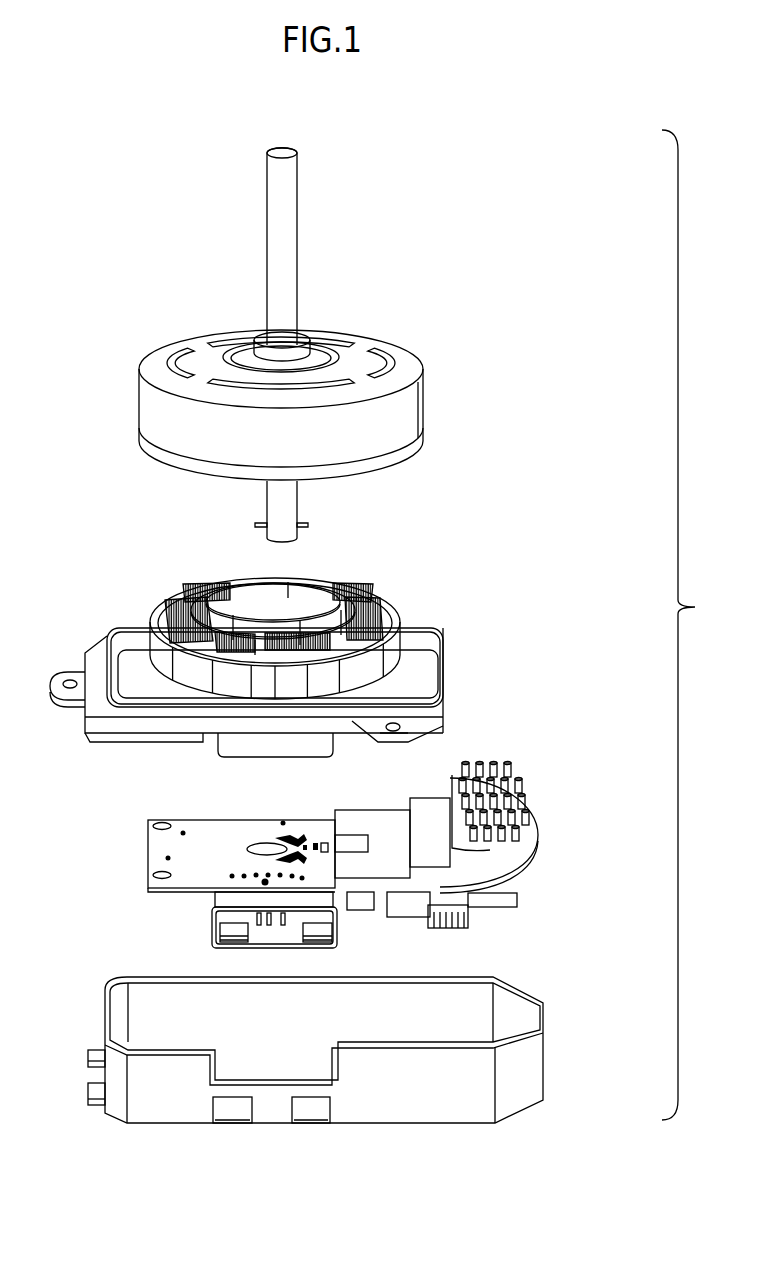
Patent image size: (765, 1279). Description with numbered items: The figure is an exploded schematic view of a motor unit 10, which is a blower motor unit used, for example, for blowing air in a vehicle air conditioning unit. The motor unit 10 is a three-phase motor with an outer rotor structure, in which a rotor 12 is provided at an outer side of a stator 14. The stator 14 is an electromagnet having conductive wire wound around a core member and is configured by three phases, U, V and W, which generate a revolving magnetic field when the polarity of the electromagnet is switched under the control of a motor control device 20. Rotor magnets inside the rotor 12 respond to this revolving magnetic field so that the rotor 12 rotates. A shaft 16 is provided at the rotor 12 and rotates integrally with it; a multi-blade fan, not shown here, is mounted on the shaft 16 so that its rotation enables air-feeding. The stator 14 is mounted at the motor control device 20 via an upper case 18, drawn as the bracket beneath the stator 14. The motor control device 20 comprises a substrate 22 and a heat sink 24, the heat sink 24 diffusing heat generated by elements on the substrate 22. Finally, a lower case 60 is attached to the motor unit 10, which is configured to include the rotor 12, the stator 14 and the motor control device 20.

The motor unit 10 is at (562, 216).
The rotor 12 is at (427, 402).
The stator 14 is at (377, 588).
The shaft 16 is at (298, 215).
The upper case 18 is at (443, 672).
The motor control device 20 is at (595, 725).
The substrate 22 is at (148, 851).
The heat sink 24 is at (537, 815).
The lower case 60 is at (547, 1058).